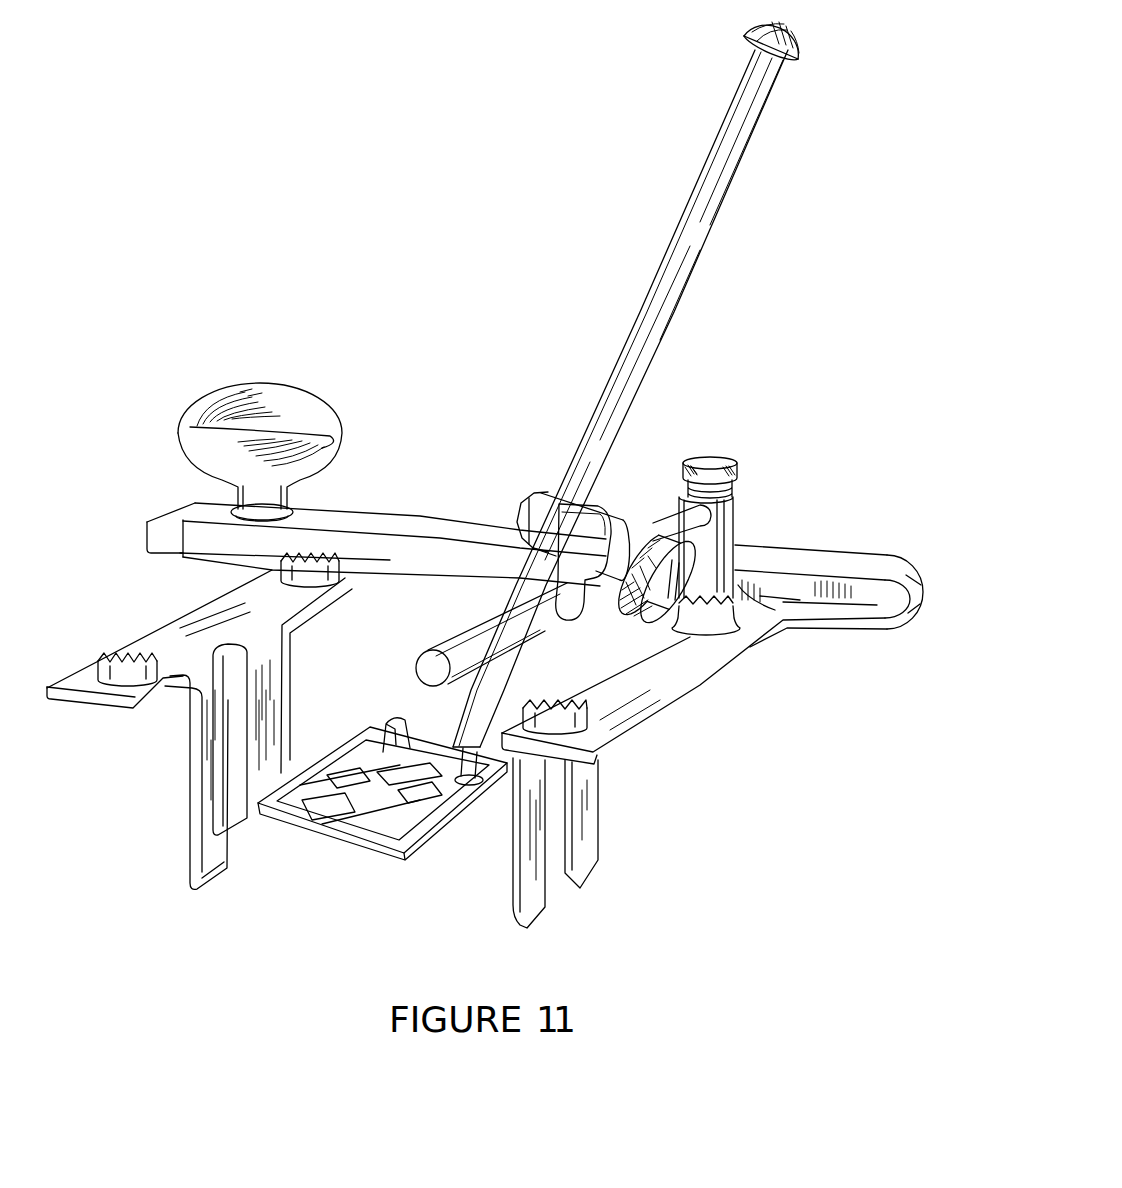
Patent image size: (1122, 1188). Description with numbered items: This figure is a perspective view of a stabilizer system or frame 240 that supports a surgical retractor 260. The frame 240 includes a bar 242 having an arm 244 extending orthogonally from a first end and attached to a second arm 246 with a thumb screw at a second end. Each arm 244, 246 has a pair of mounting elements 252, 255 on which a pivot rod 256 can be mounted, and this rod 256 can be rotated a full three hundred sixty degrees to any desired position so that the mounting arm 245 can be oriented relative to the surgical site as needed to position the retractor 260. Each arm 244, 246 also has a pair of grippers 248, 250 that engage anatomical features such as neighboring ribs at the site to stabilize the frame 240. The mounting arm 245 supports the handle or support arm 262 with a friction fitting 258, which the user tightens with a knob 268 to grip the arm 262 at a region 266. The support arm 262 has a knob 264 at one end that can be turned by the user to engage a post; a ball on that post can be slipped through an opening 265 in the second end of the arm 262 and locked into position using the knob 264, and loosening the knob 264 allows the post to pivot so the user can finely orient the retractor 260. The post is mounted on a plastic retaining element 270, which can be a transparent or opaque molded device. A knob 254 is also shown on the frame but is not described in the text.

The frame 240 is at (420, 474).
The bar 242 is at (862, 555).
The arm 244 is at (635, 707).
The mounting arm 245 is at (460, 632).
The second arm 246 is at (85, 687).
The grippers 248 is at (547, 906).
The grippers 250 is at (247, 781).
The mounting elements 252 is at (314, 560).
The knob 254 is at (274, 385).
The mounting elements 255 is at (760, 613).
The pivot rod 256 is at (737, 512).
The friction fitting 258 is at (625, 510).
The surgical retractor 260 is at (382, 828).
The support arm 262 is at (738, 172).
The knob 264 is at (808, 46).
The opening 265 is at (492, 770).
The region 266 is at (555, 494).
The knob 268 is at (632, 618).
The retaining element 270 is at (437, 837).